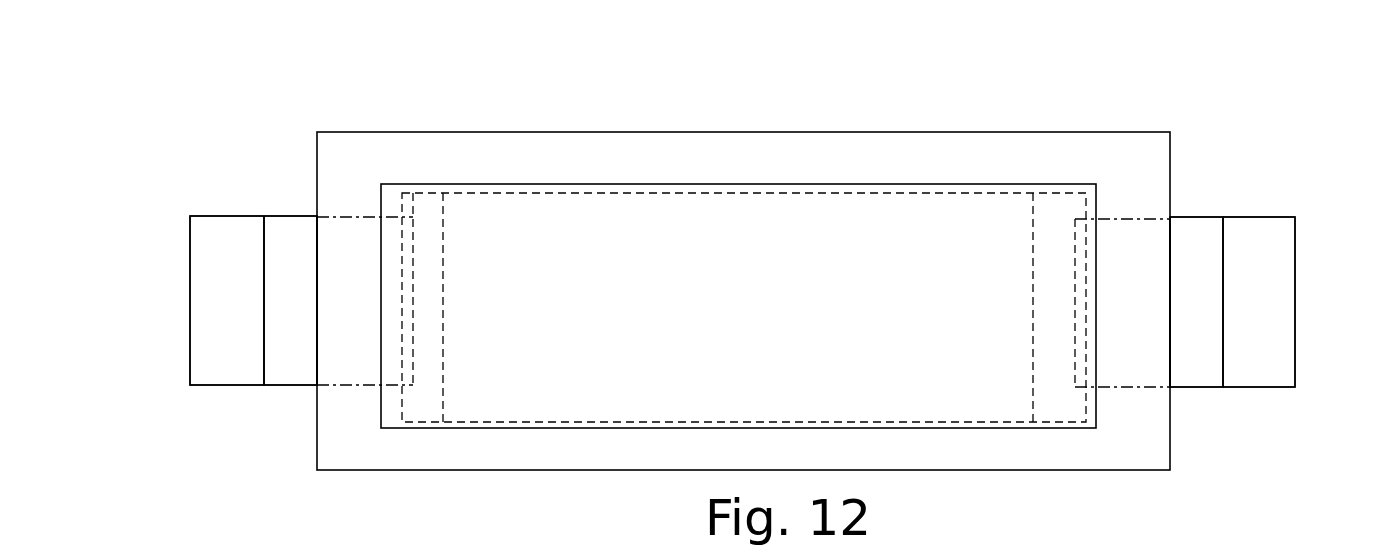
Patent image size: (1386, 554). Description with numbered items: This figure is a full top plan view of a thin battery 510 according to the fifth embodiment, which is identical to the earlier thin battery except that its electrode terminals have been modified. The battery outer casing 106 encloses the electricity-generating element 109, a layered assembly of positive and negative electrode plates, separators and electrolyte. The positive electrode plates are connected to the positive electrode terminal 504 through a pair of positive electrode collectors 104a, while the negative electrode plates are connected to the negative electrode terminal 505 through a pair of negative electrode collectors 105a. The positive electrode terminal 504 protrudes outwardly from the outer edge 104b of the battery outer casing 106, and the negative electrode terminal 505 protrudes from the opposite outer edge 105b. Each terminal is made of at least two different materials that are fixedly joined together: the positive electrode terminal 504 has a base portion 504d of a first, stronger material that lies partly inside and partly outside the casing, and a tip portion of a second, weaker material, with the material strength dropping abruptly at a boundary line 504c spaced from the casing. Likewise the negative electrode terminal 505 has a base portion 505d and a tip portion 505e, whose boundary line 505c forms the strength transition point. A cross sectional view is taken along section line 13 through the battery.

The thin battery 510 is at (1169, 99).
The battery outer casing 106 is at (700, 172).
The electricity-generating element 109 is at (822, 240).
The negative electrode collectors 105a is at (432, 272).
The outer edge 105b is at (300, 320).
The positive electrode collectors 104a is at (1055, 308).
The outer edge 104b is at (1185, 325).
The negative electrode terminal 505 is at (192, 206).
The boundary line 505c is at (258, 370).
The base portion 505d is at (283, 230).
The tip portion 505e is at (227, 247).
The positive electrode terminal 504 is at (1286, 208).
The boundary line 504c is at (1223, 377).
The base portion 504d is at (1188, 253).
The section line 13 is at (182, 310).